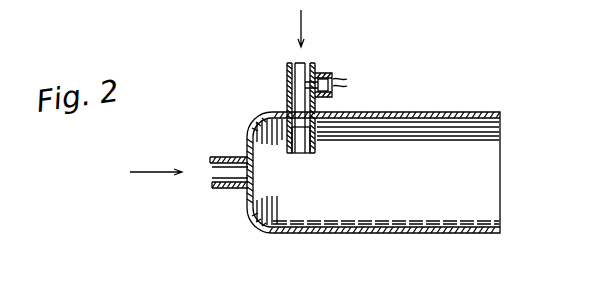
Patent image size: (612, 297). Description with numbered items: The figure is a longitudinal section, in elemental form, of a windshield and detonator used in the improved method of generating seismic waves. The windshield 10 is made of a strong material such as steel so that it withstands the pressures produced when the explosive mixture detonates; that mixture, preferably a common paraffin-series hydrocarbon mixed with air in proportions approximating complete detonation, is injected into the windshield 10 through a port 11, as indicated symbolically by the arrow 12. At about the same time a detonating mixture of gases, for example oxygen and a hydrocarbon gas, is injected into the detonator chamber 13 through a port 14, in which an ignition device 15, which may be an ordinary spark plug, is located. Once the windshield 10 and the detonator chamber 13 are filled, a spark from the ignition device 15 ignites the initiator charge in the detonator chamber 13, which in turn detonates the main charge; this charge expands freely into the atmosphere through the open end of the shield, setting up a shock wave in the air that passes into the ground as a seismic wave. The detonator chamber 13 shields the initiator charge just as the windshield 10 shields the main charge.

The windshield 10 is at (410, 233).
The port 11 is at (234, 178).
The arrow 12 is at (150, 165).
The detonator chamber 13 is at (302, 152).
The port 14 is at (290, 72).
The ignition device 15 is at (315, 68).